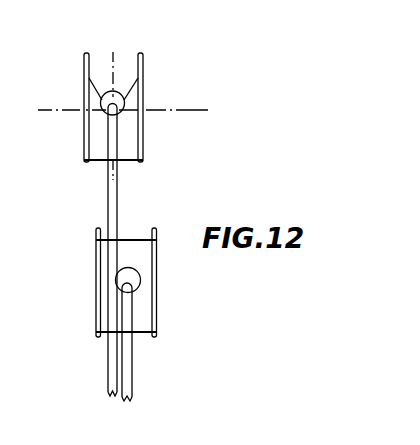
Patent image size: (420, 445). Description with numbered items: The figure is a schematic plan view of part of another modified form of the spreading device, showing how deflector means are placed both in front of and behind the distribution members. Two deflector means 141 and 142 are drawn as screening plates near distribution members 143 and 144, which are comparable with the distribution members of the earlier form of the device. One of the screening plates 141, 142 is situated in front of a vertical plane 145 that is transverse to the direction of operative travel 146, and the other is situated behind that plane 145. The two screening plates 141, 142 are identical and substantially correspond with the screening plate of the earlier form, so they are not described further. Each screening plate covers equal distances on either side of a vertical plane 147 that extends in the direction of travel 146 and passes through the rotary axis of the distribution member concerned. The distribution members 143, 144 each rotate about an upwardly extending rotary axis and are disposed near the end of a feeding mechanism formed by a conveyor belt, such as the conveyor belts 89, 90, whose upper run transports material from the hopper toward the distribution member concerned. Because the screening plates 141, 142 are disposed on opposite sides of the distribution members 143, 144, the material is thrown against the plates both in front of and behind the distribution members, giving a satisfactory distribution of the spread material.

The conveyor belt 89 is at (115, 222).
The conveyor belt 90 is at (133, 393).
The deflector means 141 is at (83, 71).
The deflector means 142 is at (143, 72).
The distribution member 143 is at (105, 116).
The distribution member 144 is at (140, 279).
The vertical plane 145 is at (113, 52).
The direction of operative travel 146 is at (55, 203).
The vertical plane 147 is at (208, 111).